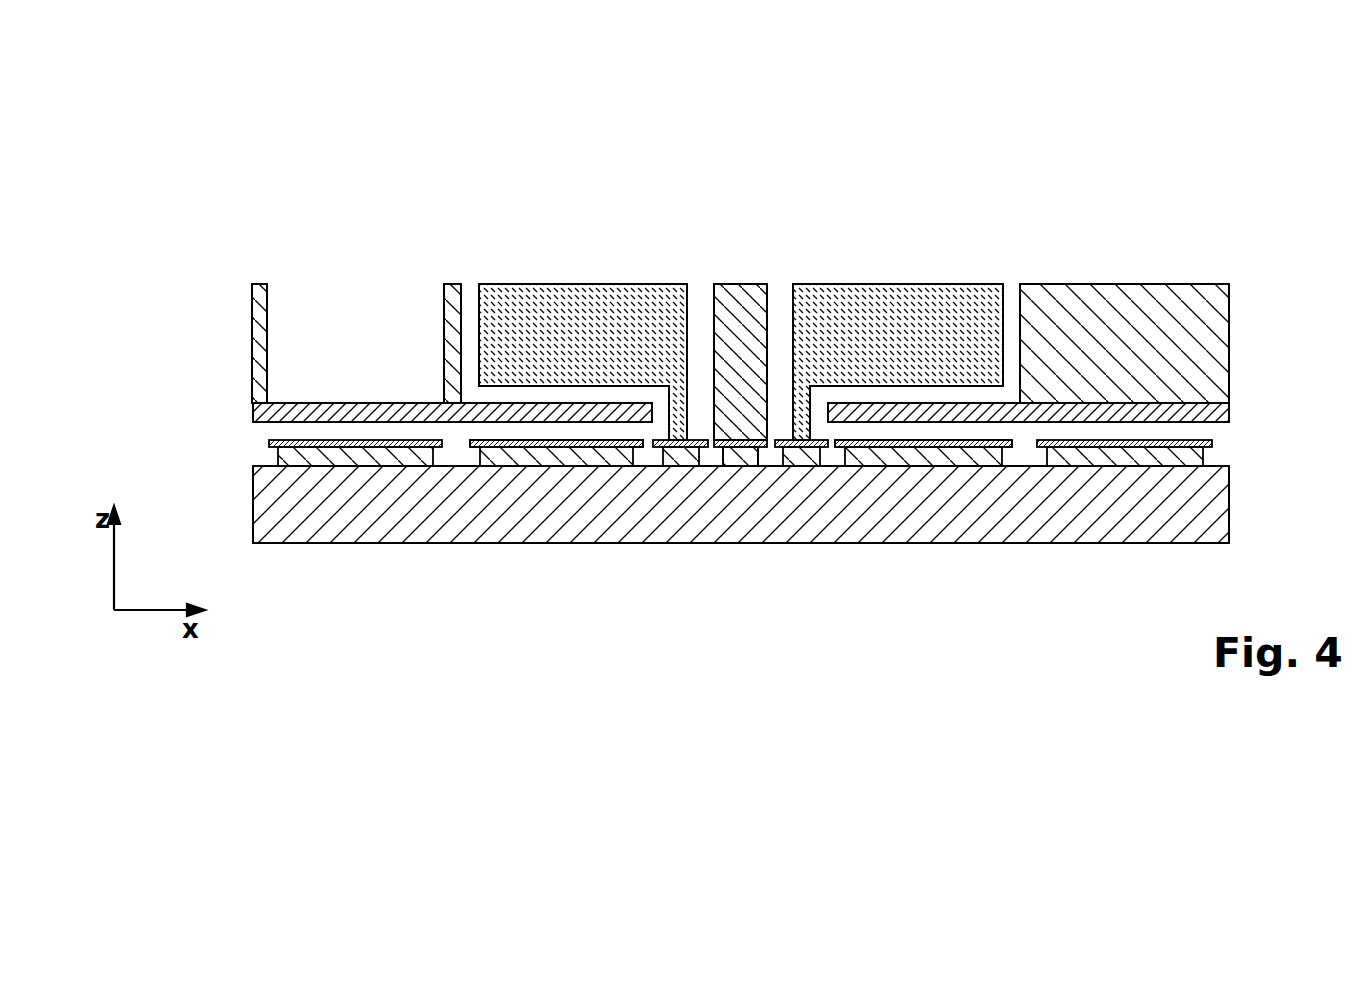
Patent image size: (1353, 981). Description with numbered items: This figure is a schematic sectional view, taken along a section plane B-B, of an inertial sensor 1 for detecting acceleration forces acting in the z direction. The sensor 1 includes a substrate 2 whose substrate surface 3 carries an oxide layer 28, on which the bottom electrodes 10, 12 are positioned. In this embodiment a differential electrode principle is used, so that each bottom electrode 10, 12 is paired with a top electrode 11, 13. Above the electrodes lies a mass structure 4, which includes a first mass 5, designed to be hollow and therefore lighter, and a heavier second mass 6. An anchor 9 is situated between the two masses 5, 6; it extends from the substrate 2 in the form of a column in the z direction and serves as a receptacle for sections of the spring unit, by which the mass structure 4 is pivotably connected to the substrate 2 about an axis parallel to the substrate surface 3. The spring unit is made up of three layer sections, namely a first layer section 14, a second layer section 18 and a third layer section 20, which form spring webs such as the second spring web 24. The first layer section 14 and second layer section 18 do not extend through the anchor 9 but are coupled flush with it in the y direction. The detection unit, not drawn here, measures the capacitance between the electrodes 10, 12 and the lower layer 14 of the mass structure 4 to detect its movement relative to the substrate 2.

The inertial sensor 1 is at (211, 196).
The substrate 2 is at (1205, 503).
The substrate surface 3 is at (250, 458).
The mass structure 4 is at (771, 316).
The first mass 5 is at (262, 292).
The second mass 6 is at (1155, 316).
The anchor 9 is at (738, 420).
The electrode 10 is at (578, 448).
The top electrode 11 is at (580, 302).
The electrode 12 is at (915, 447).
The top electrode 13 is at (906, 302).
The first layer section 14 is at (1205, 412).
The second layer section 18 is at (776, 329).
The third layer section 20 is at (1205, 343).
The second spring web 24 is at (758, 275).
The oxide layer 28 is at (1185, 455).